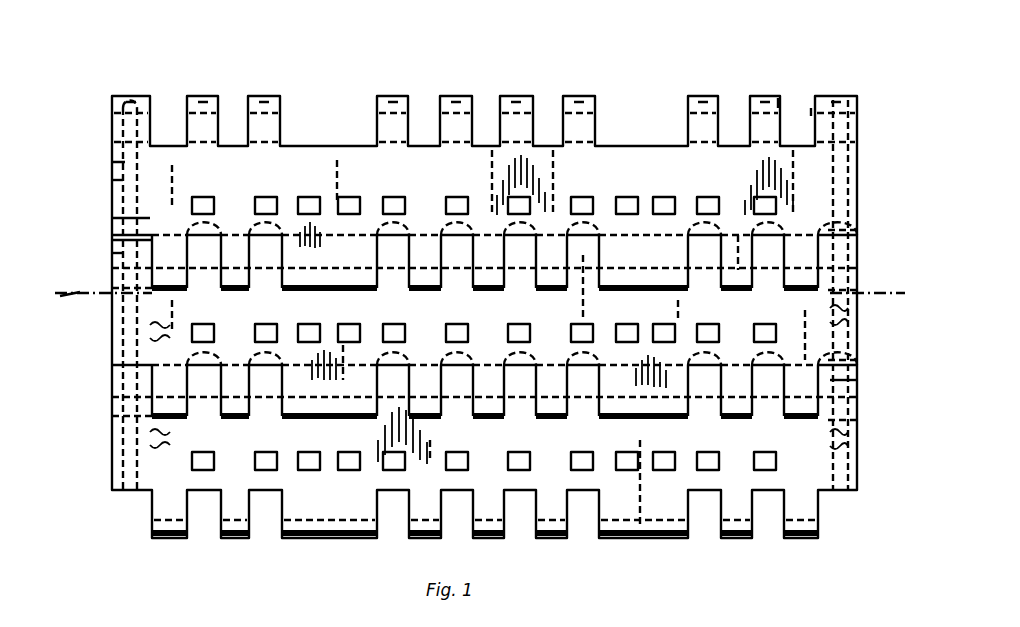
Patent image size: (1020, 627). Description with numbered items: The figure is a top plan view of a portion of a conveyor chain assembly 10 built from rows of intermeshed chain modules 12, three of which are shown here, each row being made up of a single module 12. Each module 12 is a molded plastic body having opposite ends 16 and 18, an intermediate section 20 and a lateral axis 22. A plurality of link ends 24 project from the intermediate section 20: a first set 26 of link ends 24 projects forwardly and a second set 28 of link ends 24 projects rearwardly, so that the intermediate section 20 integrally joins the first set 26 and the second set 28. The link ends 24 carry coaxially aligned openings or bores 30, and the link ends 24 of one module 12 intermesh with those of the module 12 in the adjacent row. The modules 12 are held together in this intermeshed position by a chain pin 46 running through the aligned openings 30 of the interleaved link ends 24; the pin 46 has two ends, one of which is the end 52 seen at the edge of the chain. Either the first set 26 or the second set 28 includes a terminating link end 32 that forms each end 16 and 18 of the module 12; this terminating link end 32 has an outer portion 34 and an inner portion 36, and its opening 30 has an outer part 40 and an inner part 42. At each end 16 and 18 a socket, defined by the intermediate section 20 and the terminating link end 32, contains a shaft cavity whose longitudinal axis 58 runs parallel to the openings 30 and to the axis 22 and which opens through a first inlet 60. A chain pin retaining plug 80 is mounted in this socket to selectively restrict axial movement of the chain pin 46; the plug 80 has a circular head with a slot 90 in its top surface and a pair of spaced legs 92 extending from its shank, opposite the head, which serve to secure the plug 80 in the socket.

The conveyor chain assembly 10 is at (757, 74).
The chain module 12 is at (147, 182).
The end 16 is at (112, 150).
The end 18 is at (857, 160).
The intermediate section 20 is at (639, 148).
The lateral axis 22 is at (892, 292).
The link ends 24 is at (398, 100).
The first set of link ends 26 is at (560, 102).
The second set of link ends 28 is at (553, 293).
The coaxially aligned openings 30 is at (812, 112).
The terminating link end 32 is at (112, 410).
The outer portion 34 is at (857, 196).
The inner portion 36 is at (857, 440).
The outer part 40 is at (120, 103).
The inner part 42 is at (151, 100).
The chain pin 46 is at (334, 258).
The end of chain pin 52 is at (152, 254).
The longitudinal axis 58 is at (82, 306).
The first inlet 60 is at (137, 180).
The chain pin retaining plug 80 is at (112, 433).
The slot 90 is at (857, 381).
The legs 92 is at (160, 440).